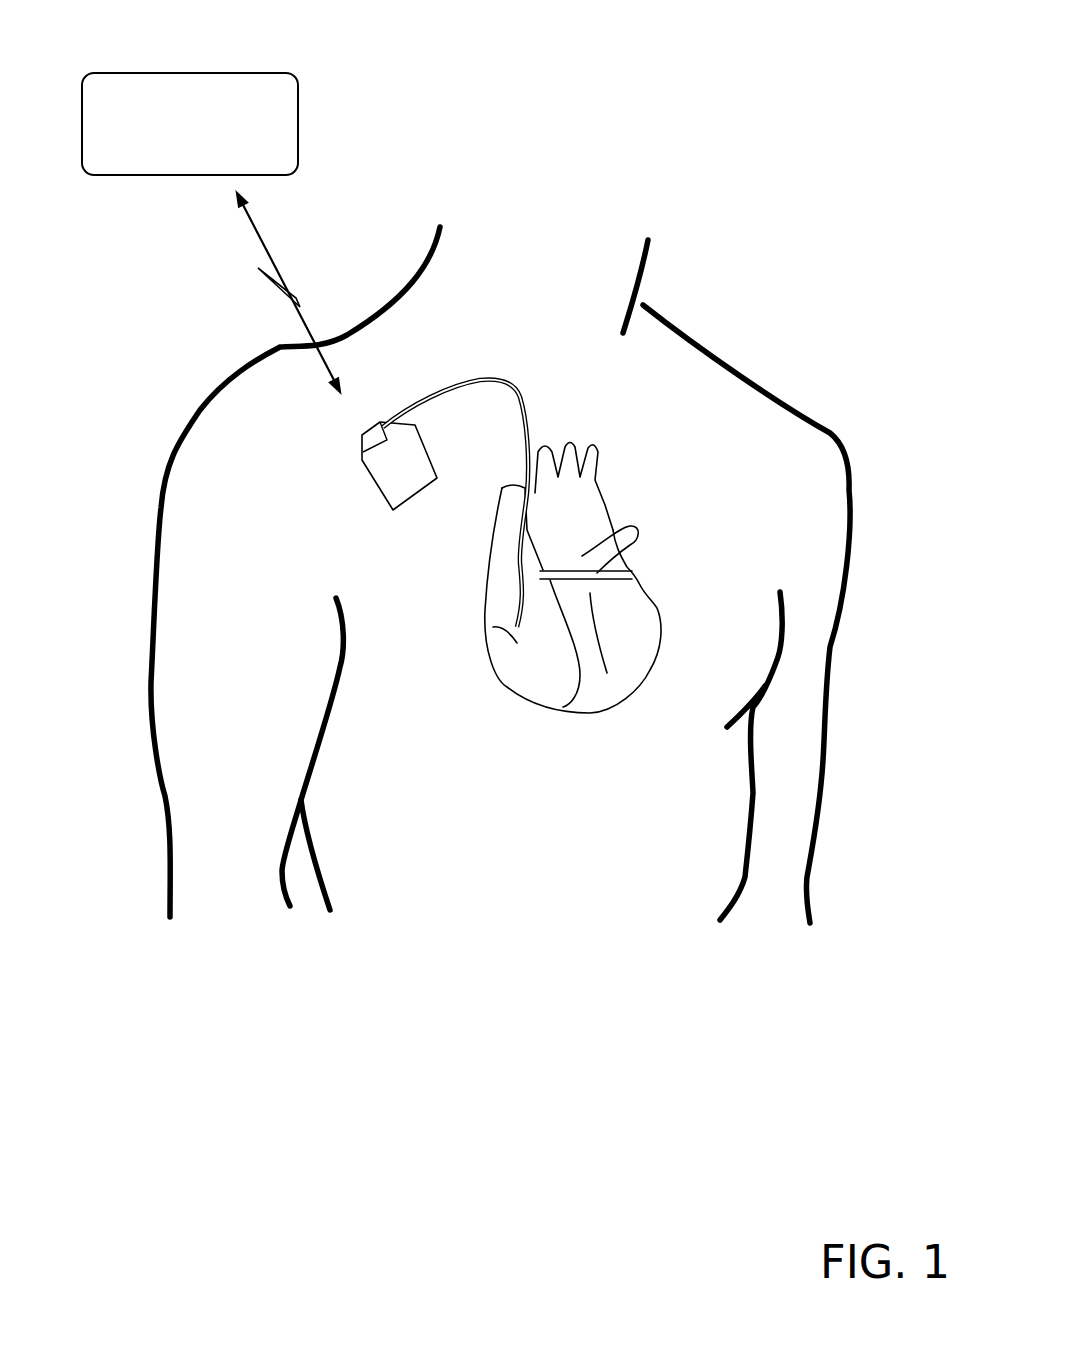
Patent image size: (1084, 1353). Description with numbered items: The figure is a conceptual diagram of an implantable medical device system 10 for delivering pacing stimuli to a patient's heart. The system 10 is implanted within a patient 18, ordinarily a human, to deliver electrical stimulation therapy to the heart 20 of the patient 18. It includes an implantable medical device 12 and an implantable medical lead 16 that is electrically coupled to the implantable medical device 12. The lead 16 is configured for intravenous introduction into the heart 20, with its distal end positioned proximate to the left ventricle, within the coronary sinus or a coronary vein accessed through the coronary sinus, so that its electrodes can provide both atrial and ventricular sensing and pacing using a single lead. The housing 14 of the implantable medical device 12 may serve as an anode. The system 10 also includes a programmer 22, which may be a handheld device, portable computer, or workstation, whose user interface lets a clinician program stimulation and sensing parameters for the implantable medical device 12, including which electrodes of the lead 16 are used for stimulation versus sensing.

The implantable medical device system 10 is at (792, 203).
The implantable medical device 12 is at (360, 467).
The housing 14 is at (399, 466).
The implantable medical lead 16 is at (520, 395).
The patient 18 is at (690, 340).
The heart 20 is at (647, 612).
The programmer 22 is at (155, 73).